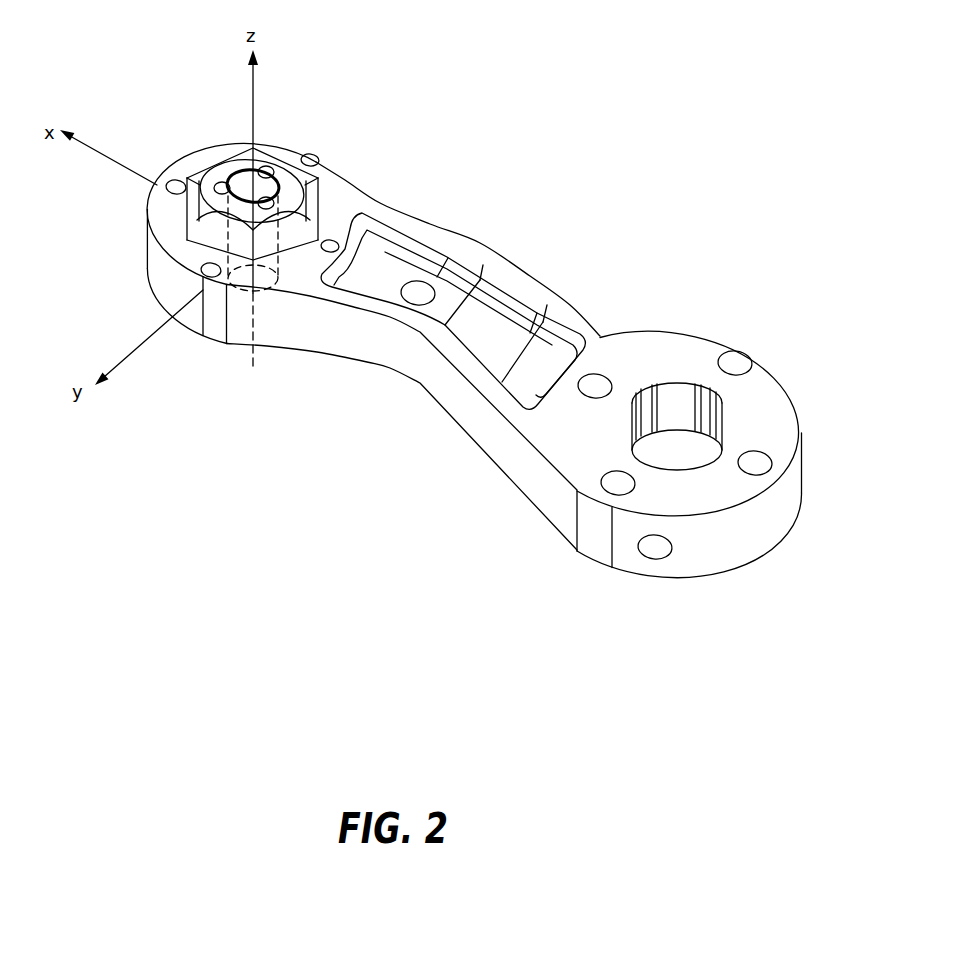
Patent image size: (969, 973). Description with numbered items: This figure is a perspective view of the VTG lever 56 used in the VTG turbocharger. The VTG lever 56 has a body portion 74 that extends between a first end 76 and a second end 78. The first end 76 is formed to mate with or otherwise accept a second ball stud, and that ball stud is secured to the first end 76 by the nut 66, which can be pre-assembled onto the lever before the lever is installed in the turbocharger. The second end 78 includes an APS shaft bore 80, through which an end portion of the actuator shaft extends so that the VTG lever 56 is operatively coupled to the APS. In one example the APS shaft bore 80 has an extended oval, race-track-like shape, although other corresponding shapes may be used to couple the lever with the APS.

The VTG lever 56 is at (557, 126).
The nut 66 is at (298, 188).
The body portion 74 is at (520, 335).
The first end 76 is at (200, 163).
The second end 78 is at (767, 415).
The APS shaft bore 80 is at (675, 406).